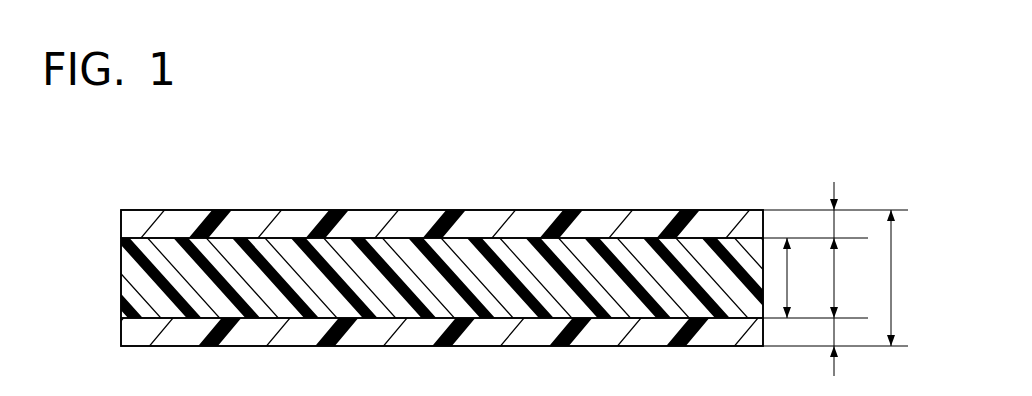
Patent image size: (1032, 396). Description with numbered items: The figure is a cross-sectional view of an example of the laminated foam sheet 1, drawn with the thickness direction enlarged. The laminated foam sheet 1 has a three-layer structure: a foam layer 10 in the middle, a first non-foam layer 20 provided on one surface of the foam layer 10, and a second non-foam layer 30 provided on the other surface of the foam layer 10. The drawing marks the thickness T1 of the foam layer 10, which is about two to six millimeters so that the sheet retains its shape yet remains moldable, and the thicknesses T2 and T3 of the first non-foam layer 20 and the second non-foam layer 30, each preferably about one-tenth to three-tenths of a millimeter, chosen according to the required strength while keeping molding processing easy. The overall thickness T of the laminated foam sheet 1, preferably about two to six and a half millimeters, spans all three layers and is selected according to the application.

The laminated foam sheet 1 is at (768, 125).
The foam layer 10 is at (140, 280).
The first non-foam layer 20 is at (140, 225).
The second non-foam layer 30 is at (140, 334).
The thickness of the laminated foam sheet T is at (898, 278).
The thickness of the foam layer T1 is at (797, 278).
The thickness of the first non-foam layer T2 is at (845, 279).
The thickness of the second non-foam layer T3 is at (845, 332).